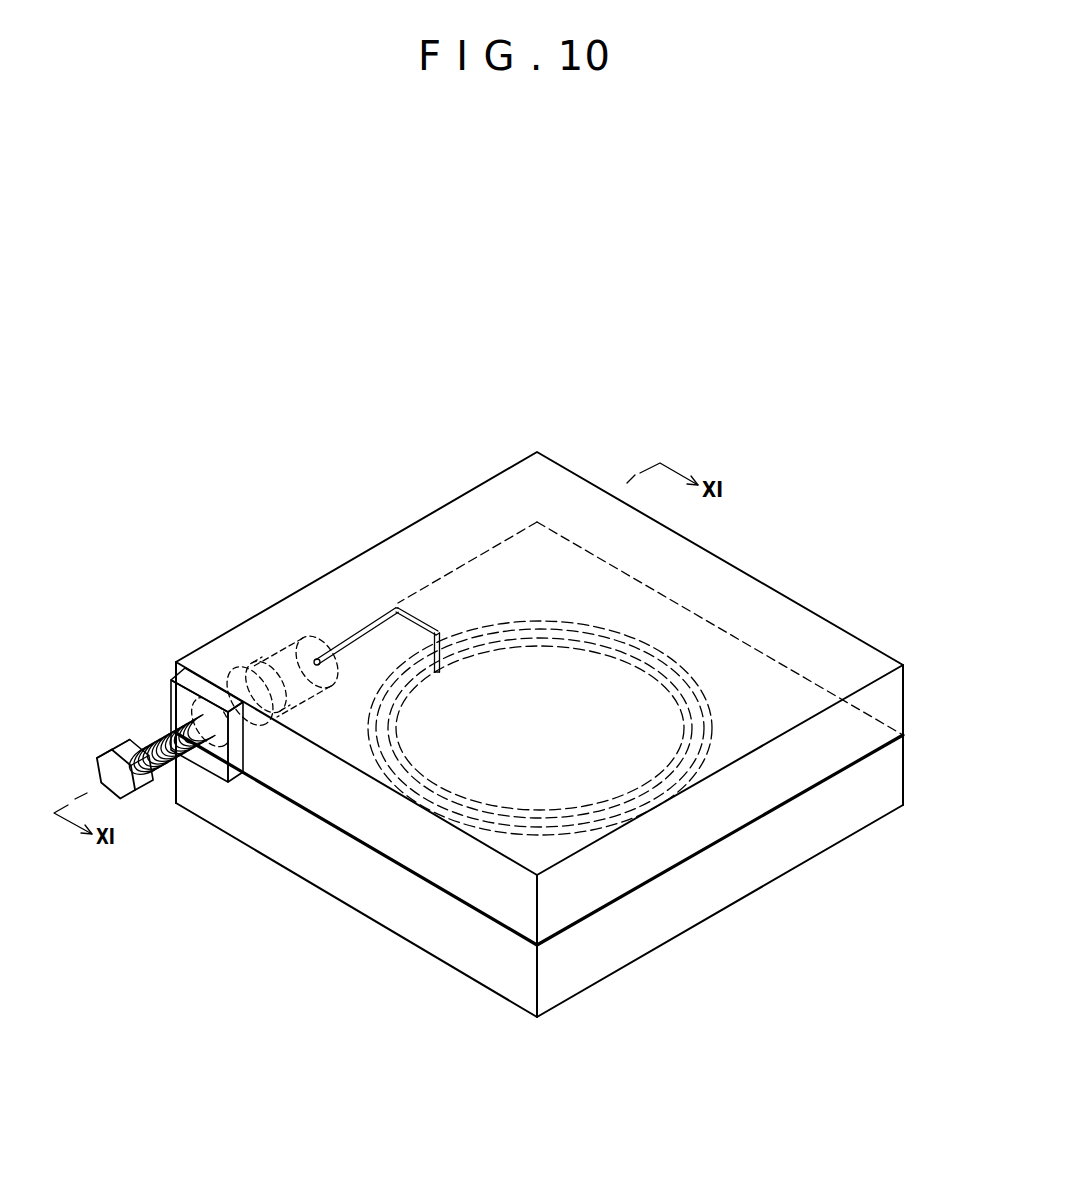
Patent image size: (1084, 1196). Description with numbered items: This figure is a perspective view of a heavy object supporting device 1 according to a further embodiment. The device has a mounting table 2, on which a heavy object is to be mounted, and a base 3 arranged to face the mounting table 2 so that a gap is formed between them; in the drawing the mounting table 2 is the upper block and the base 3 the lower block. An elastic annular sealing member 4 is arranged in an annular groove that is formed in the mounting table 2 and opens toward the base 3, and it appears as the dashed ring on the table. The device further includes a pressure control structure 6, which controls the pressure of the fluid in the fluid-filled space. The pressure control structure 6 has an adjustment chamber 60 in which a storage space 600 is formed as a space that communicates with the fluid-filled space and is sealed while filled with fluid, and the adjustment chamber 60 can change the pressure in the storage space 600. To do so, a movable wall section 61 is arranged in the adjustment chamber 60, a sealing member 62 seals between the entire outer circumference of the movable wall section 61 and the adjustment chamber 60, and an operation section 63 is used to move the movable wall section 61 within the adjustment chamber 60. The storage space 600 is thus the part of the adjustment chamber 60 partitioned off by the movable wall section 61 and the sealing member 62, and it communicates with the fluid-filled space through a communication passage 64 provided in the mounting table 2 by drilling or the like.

The heavy object supporting device 1 is at (596, 432).
The mounting table 2 is at (912, 691).
The base 3 is at (912, 769).
The elastic annular sealing member 4 is at (670, 658).
The pressure control structure 6 is at (93, 750).
The adjustment chamber 60 is at (300, 593).
The movable wall section 61 is at (278, 668).
The sealing member 62 is at (250, 668).
The operation section 63 is at (162, 735).
The communication passage 64 is at (372, 618).
The storage space 600 is at (316, 628).